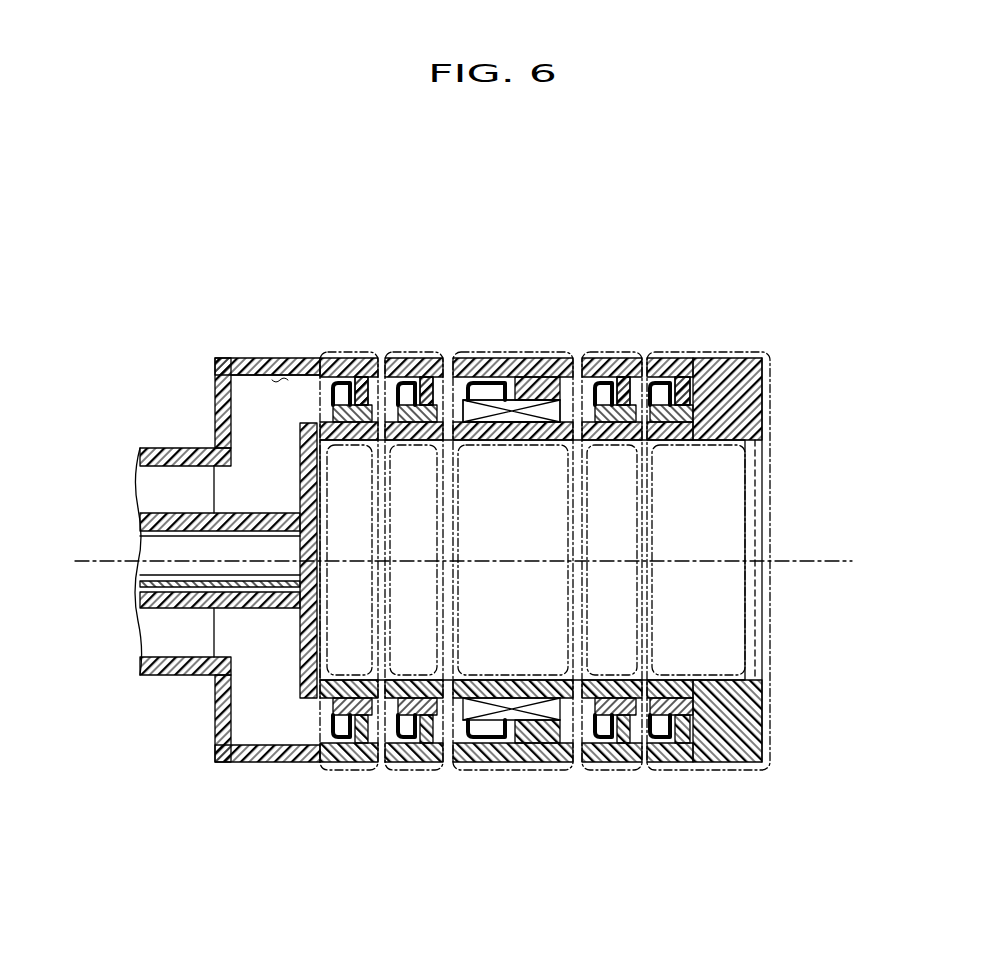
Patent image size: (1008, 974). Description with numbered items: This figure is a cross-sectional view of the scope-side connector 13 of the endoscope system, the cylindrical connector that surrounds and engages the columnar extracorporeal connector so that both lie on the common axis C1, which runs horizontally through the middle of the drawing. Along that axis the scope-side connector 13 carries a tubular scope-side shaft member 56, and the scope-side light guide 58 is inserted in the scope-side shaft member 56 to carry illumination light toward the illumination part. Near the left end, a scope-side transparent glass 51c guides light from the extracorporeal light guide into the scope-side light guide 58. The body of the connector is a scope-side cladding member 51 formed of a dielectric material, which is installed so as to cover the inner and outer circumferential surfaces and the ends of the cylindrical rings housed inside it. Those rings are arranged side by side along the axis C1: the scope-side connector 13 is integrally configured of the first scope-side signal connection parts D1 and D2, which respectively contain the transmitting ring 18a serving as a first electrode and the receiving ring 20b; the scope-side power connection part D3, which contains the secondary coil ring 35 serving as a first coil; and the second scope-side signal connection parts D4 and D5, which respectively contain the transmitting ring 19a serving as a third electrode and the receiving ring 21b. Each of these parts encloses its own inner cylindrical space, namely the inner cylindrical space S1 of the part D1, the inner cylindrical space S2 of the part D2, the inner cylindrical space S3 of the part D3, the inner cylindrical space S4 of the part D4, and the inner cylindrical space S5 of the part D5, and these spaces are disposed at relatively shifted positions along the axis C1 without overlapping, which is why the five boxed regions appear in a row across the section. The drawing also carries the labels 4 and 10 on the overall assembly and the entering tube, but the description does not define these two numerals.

The motor 4 is at (162, 318).
The scope-side connector 13 is at (214, 356).
The scope-side cladding member 51 is at (290, 358).
The scope-side transparent glass 51c is at (302, 560).
The tube 10 is at (165, 448).
The scope-side light guide 58 is at (140, 548).
The scope-side shaft member 56 is at (140, 596).
The axis C1 is at (826, 560).
The second scope-side signal connection part D5 is at (342, 352).
The first scope-side signal connection part D2 is at (397, 352).
The scope-side power connection part D3 is at (500, 352).
The second scope-side signal connection part D4 is at (600, 352).
The first scope-side signal connection part D1 is at (726, 352).
The receiving ring 21b is at (366, 420).
The receiving ring 20b is at (428, 420).
The secondary coil ring 35 is at (540, 410).
The transmitting ring 19a is at (632, 420).
The transmitting ring 18a is at (690, 420).
The inner cylindrical space S5 is at (352, 700).
The inner cylindrical space S2 is at (412, 700).
The inner cylindrical space S3 is at (515, 700).
The inner cylindrical space S4 is at (613, 700).
The inner cylindrical space S1 is at (713, 700).